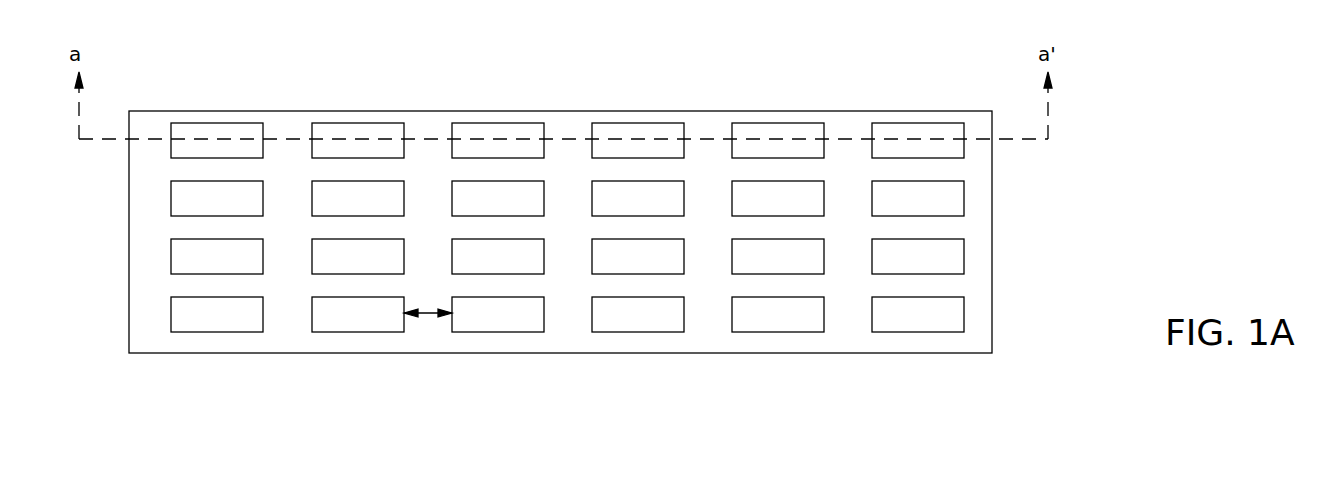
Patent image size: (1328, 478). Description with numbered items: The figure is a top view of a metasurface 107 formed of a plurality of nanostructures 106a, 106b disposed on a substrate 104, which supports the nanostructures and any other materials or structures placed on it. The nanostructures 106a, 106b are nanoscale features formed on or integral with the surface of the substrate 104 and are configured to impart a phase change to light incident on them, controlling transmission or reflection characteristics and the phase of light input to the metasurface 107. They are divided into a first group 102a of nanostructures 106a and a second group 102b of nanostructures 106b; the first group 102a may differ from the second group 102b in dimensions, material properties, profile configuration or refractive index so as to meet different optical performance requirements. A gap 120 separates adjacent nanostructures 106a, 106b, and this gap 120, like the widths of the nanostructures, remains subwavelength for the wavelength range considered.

The first group of nanostructures 102a is at (545, 400).
The second group of nanostructures 102b is at (965, 400).
The substrate 104 is at (992, 302).
The nanostructures 106a is at (362, 105).
The nanostructures 106b is at (646, 106).
The metasurface 107 is at (863, 75).
The gap 120 is at (430, 314).